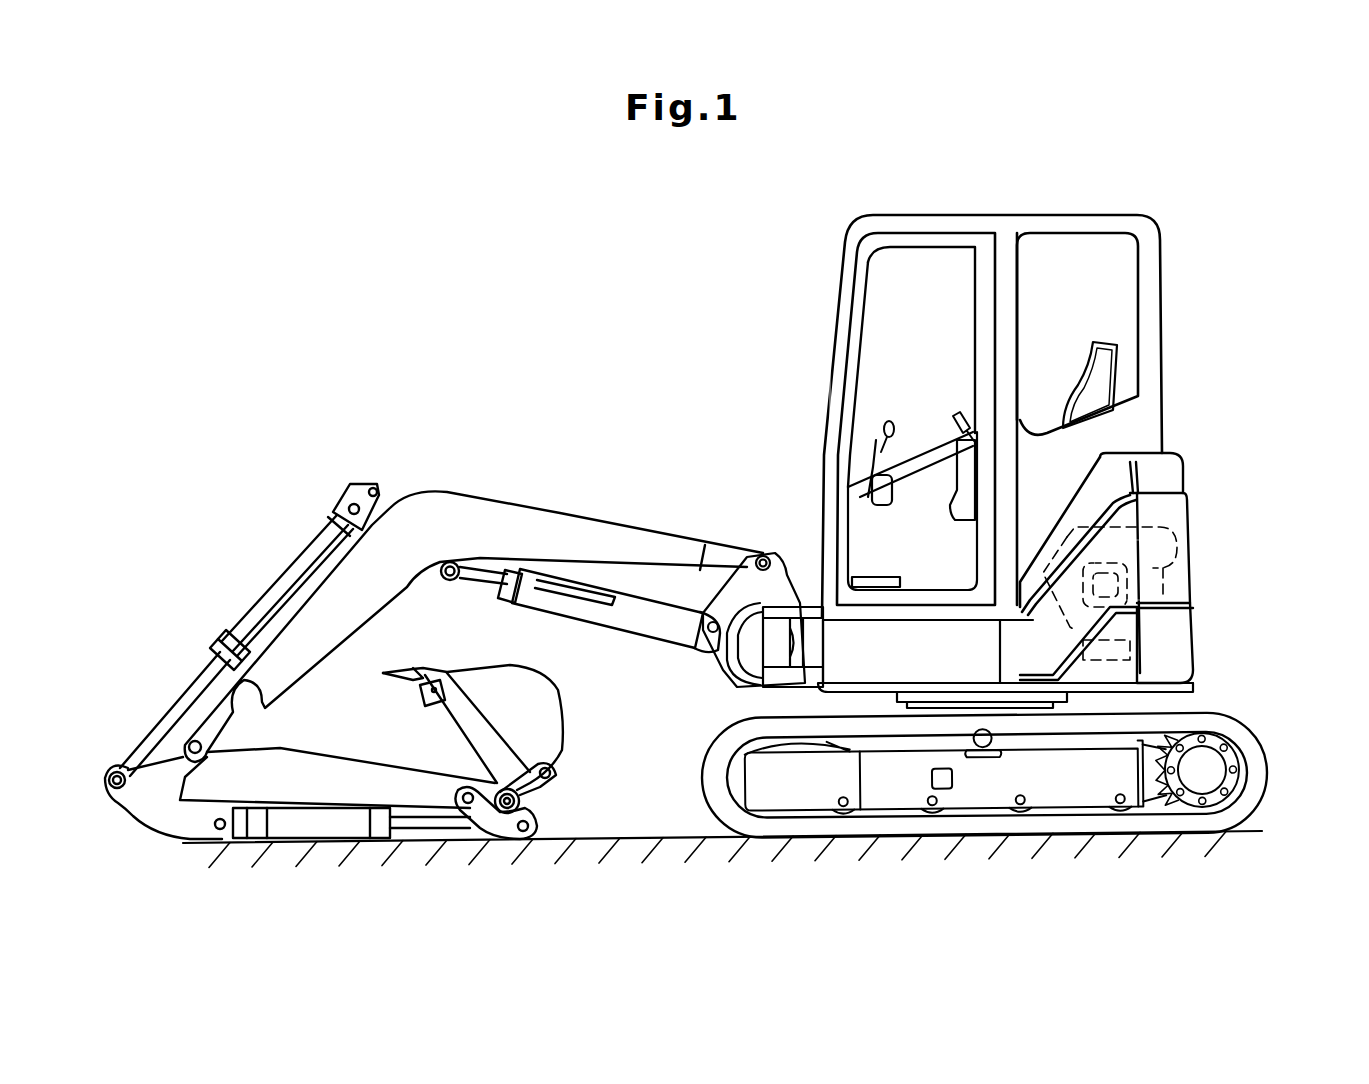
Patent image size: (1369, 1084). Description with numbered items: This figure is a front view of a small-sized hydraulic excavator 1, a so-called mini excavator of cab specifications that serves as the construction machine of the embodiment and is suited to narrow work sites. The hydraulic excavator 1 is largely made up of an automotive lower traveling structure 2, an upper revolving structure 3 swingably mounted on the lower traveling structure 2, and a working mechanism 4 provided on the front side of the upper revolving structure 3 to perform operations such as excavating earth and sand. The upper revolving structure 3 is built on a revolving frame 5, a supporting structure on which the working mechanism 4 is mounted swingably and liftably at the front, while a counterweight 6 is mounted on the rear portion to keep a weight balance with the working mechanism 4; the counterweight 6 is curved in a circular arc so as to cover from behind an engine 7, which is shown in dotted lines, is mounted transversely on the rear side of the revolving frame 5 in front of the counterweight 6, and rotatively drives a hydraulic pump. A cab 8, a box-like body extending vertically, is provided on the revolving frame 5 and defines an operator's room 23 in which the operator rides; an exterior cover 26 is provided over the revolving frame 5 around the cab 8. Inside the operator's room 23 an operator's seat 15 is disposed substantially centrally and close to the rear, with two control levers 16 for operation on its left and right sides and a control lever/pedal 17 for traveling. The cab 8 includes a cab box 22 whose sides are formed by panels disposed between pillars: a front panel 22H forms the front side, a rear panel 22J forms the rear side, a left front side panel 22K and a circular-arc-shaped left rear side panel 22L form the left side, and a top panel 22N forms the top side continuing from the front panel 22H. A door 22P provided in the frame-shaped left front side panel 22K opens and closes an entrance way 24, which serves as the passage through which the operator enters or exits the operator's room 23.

The hydraulic excavator 1 is at (830, 226).
The lower traveling structure 2 is at (967, 793).
The upper revolving structure 3 is at (1212, 476).
The working mechanism 4 is at (448, 512).
The revolving frame 5 is at (880, 684).
The counterweight 6 is at (1173, 650).
The engine 7 is at (1165, 570).
The cab 8 is at (971, 205).
The operator's seat 15 is at (1105, 343).
The control levers 16 is at (955, 412).
The control lever/pedal 17 is at (888, 421).
The cab box 22 is at (1057, 223).
The front panel 22H is at (828, 420).
The rear panel 22J is at (1163, 358).
The left front side panel 22K is at (927, 223).
The left rear side panel 22L is at (1113, 433).
The top panel 22N is at (1102, 212).
The door 22P is at (863, 493).
The operator's room 23 is at (887, 308).
The entrance way 24 is at (848, 377).
The exterior cover 26 is at (1173, 522).